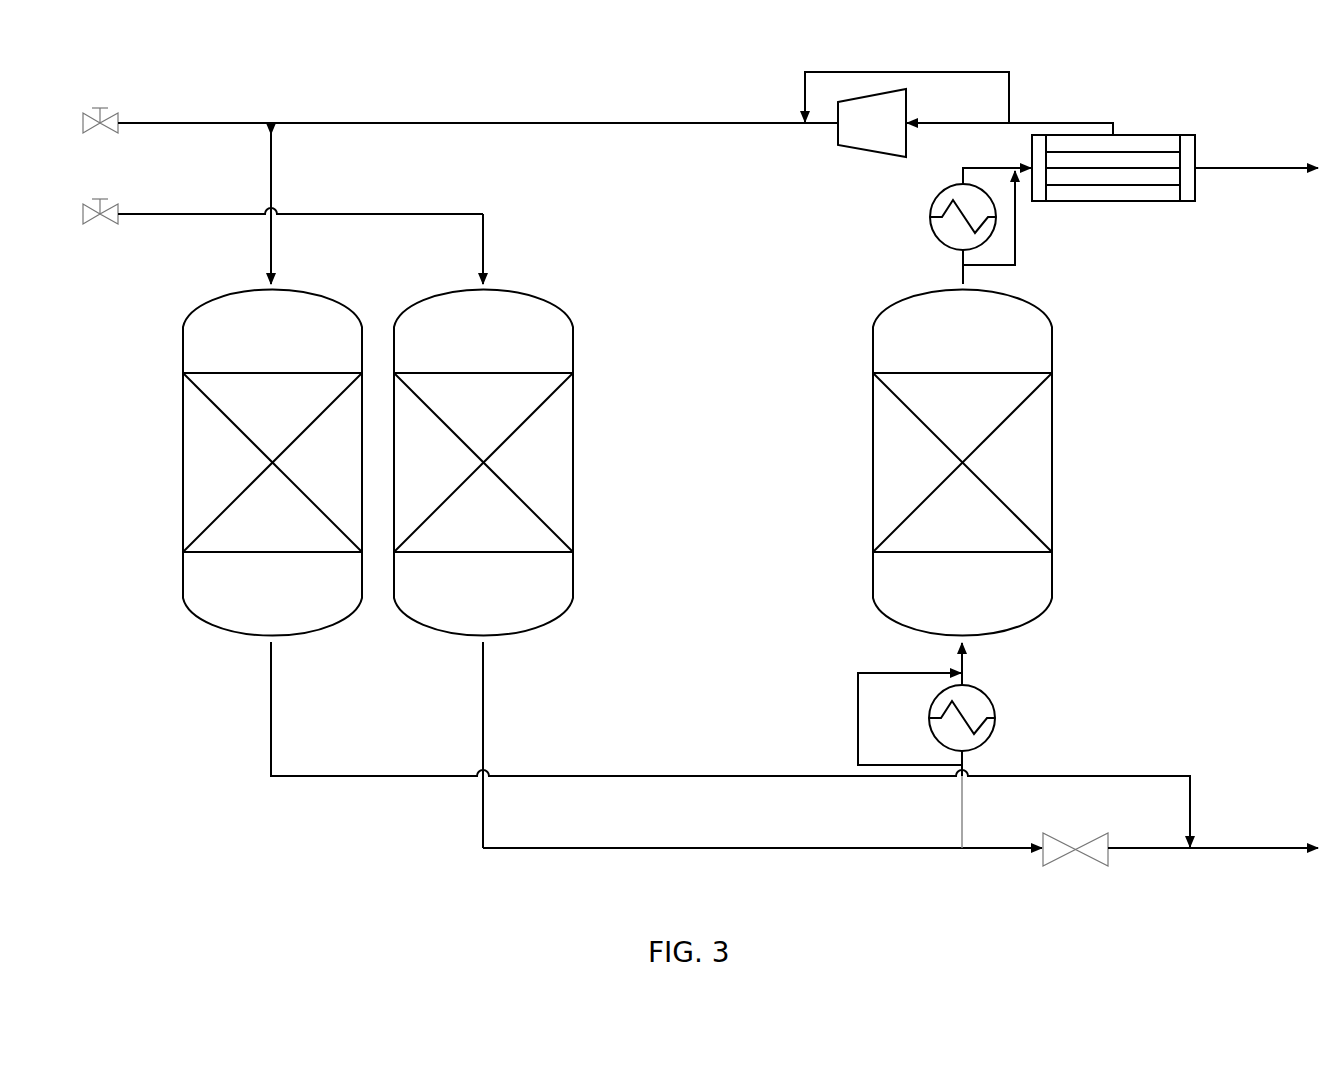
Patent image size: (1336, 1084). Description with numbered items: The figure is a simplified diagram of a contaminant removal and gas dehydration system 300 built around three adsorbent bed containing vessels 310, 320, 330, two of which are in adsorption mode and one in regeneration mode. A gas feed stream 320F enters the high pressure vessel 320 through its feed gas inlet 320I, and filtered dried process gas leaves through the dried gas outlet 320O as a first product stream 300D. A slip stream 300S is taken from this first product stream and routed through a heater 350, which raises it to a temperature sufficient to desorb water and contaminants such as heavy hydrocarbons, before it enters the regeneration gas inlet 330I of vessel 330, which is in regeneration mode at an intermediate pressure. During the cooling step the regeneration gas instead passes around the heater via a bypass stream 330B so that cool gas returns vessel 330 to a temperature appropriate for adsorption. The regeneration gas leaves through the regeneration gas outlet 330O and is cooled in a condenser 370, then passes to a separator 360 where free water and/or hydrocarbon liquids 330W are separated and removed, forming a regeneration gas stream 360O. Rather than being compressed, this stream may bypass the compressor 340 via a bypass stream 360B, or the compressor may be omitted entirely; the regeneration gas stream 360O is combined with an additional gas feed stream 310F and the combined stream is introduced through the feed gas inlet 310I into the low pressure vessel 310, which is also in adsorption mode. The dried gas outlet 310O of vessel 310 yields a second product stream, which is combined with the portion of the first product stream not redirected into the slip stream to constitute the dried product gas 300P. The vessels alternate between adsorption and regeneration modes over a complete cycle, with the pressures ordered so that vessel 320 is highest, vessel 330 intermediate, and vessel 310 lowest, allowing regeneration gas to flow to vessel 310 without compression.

The system 300 is at (175, 840).
The first product stream 300D is at (795, 858).
The dried product gas 300P is at (1213, 835).
The slip stream 300S is at (930, 812).
The adsorbent bed containing vessel 310 is at (272, 462).
The additional gas feed stream 310F is at (177, 111).
The feed gas inlet 310I is at (240, 203).
The dried gas outlet 310O is at (693, 744).
The adsorbent bed containing vessel 320 is at (483, 462).
The gas feed stream 320F is at (283, 202).
The feed gas inlet 320I is at (449, 249).
The dried gas outlet 320O is at (445, 745).
The adsorbent bed containing vessel 330 is at (962, 462).
The bypass stream 330B is at (876, 719).
The regeneration gas inlet 330I is at (928, 664).
The regeneration gas outlet 330O is at (950, 228).
The free water and/or hydrocarbon liquids 330W is at (1256, 152).
The compressor 340 is at (872, 123).
The heater 350 is at (937, 730).
The separator 360 is at (1051, 181).
The bypass stream 360B is at (907, 79).
The regeneration gas stream 360O is at (554, 107).
The condenser 370 is at (955, 209).